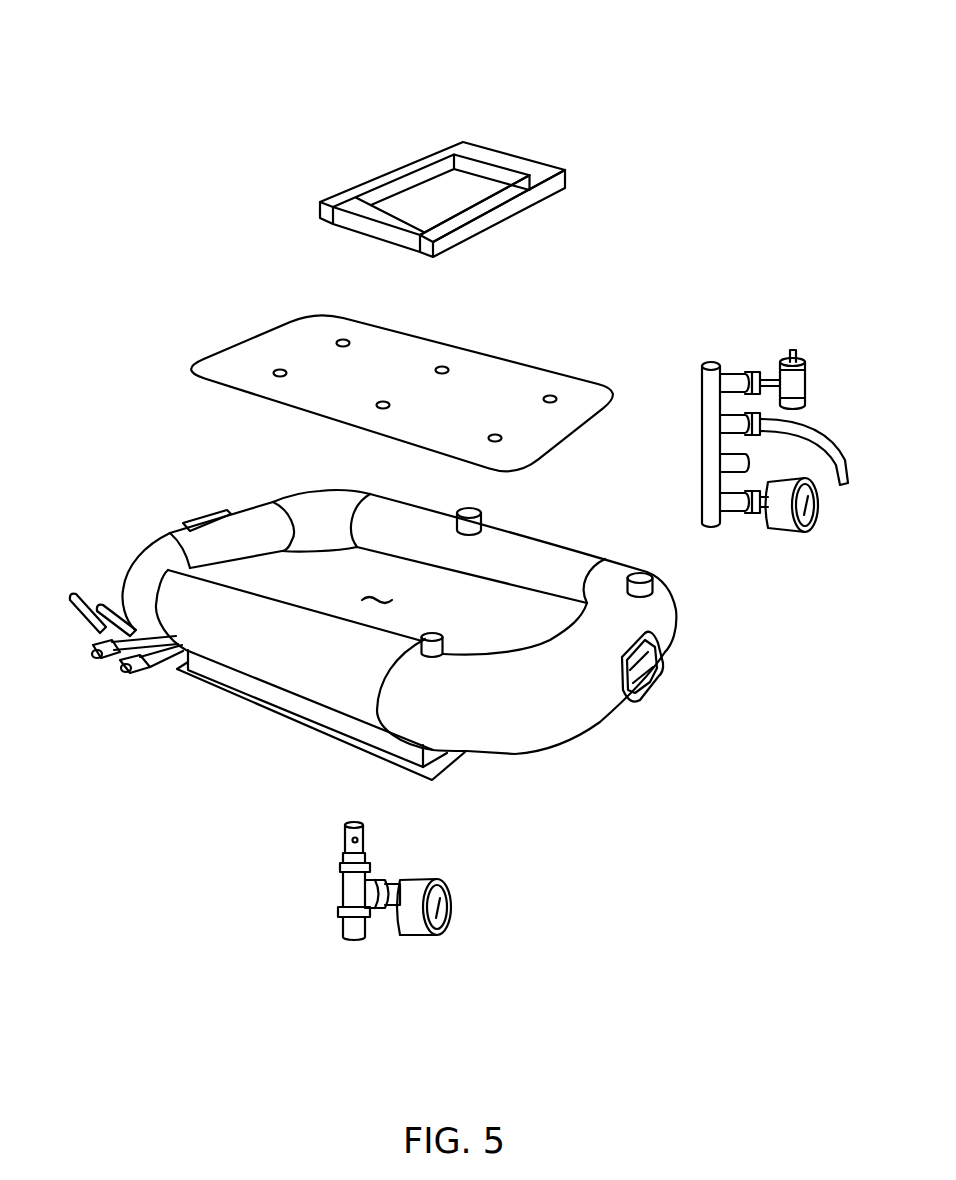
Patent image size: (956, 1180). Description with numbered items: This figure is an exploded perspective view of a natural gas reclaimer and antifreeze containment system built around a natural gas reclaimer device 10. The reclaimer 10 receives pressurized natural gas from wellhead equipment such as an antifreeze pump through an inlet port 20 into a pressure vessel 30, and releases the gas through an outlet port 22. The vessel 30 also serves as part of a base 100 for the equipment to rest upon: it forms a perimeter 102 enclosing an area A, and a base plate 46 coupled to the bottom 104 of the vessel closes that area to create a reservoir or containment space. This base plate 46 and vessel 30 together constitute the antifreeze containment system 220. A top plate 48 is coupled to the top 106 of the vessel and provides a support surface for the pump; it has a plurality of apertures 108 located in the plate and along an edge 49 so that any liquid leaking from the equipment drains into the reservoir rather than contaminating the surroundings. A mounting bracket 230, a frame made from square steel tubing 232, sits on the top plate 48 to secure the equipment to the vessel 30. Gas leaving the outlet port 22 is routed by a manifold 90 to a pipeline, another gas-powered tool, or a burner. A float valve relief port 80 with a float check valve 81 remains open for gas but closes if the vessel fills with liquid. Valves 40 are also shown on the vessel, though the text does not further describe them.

The natural gas reclaimer device 10 is at (178, 95).
The base 100 is at (213, 185).
The mounting bracket 230 is at (479, 229).
The square steel tubing 232 is at (536, 193).
The antifreeze containment system 220 is at (142, 405).
The apertures 108 is at (344, 341).
The top plate 48 is at (261, 356).
The edge 49 is at (443, 368).
The pressure vessel 30 is at (590, 768).
The perimeter 102 is at (306, 496).
The top 106 is at (556, 548).
The bottom 104 is at (513, 753).
The base plate 46 is at (510, 639).
The inlet port 20 is at (482, 513).
The outlet port 22 is at (652, 575).
The valve 40 is at (107, 662).
The manifold 90 is at (735, 338).
The float valve relief port 80 is at (293, 893).
The float check valve 81 is at (345, 850).